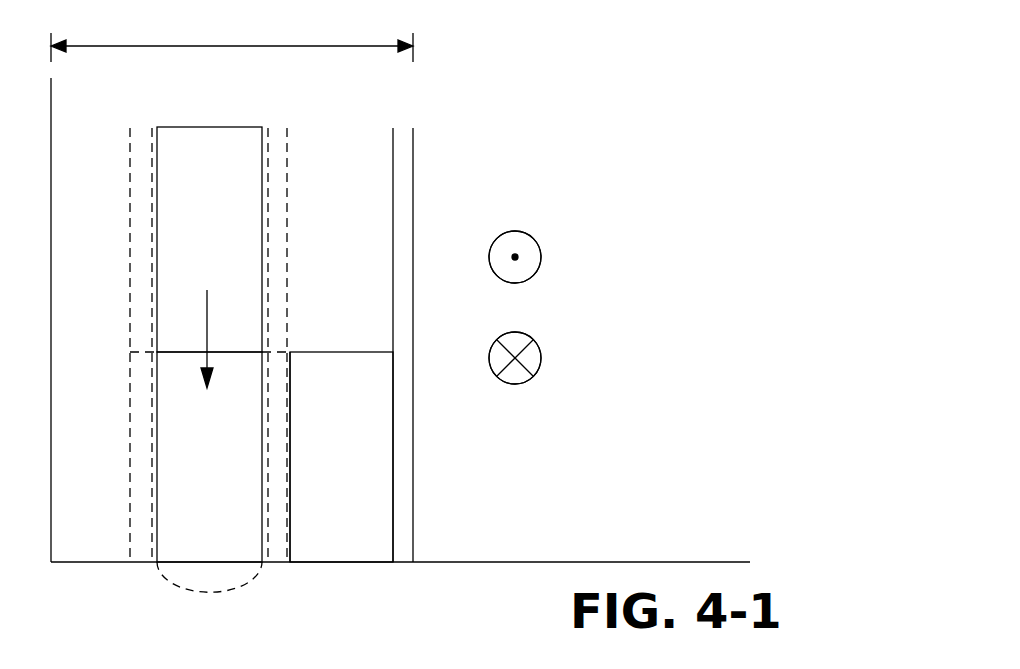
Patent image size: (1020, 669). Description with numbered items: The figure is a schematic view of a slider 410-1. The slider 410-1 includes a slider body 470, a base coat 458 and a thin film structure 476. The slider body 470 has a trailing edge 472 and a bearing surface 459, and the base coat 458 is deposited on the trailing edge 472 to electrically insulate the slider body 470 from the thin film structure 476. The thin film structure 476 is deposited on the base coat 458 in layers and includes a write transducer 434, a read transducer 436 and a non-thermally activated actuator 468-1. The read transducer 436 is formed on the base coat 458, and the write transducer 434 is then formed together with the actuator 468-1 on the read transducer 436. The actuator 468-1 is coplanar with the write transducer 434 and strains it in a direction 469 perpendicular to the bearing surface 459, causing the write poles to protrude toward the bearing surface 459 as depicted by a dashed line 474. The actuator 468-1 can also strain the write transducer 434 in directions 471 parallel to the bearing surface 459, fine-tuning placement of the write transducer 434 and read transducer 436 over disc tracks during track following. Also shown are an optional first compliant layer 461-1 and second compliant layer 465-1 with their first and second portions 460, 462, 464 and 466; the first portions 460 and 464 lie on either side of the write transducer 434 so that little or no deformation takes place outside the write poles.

The slider 410-1 is at (643, 137).
The write transducer 434 is at (240, 459).
The read transducer 436 is at (372, 458).
The base coat 458 is at (403, 175).
The bearing surface 459 is at (730, 563).
The first portion of first compliant layer 460 is at (275, 538).
The first compliant layer 461-1 is at (288, 150).
The second portion of first compliant layer 462 is at (275, 177).
The first portion of second compliant layer 464 is at (140, 443).
The second compliant layer 465-1 is at (128, 150).
The second portion of second compliant layer 466 is at (143, 197).
The non-thermally activated actuator 468-1 is at (250, 262).
The direction 469 is at (207, 327).
The slider body 470 is at (633, 325).
The directions 471 is at (538, 343).
The trailing edge 472 is at (415, 538).
The dashed line 474 is at (190, 590).
The thin film structure 476 is at (276, 44).